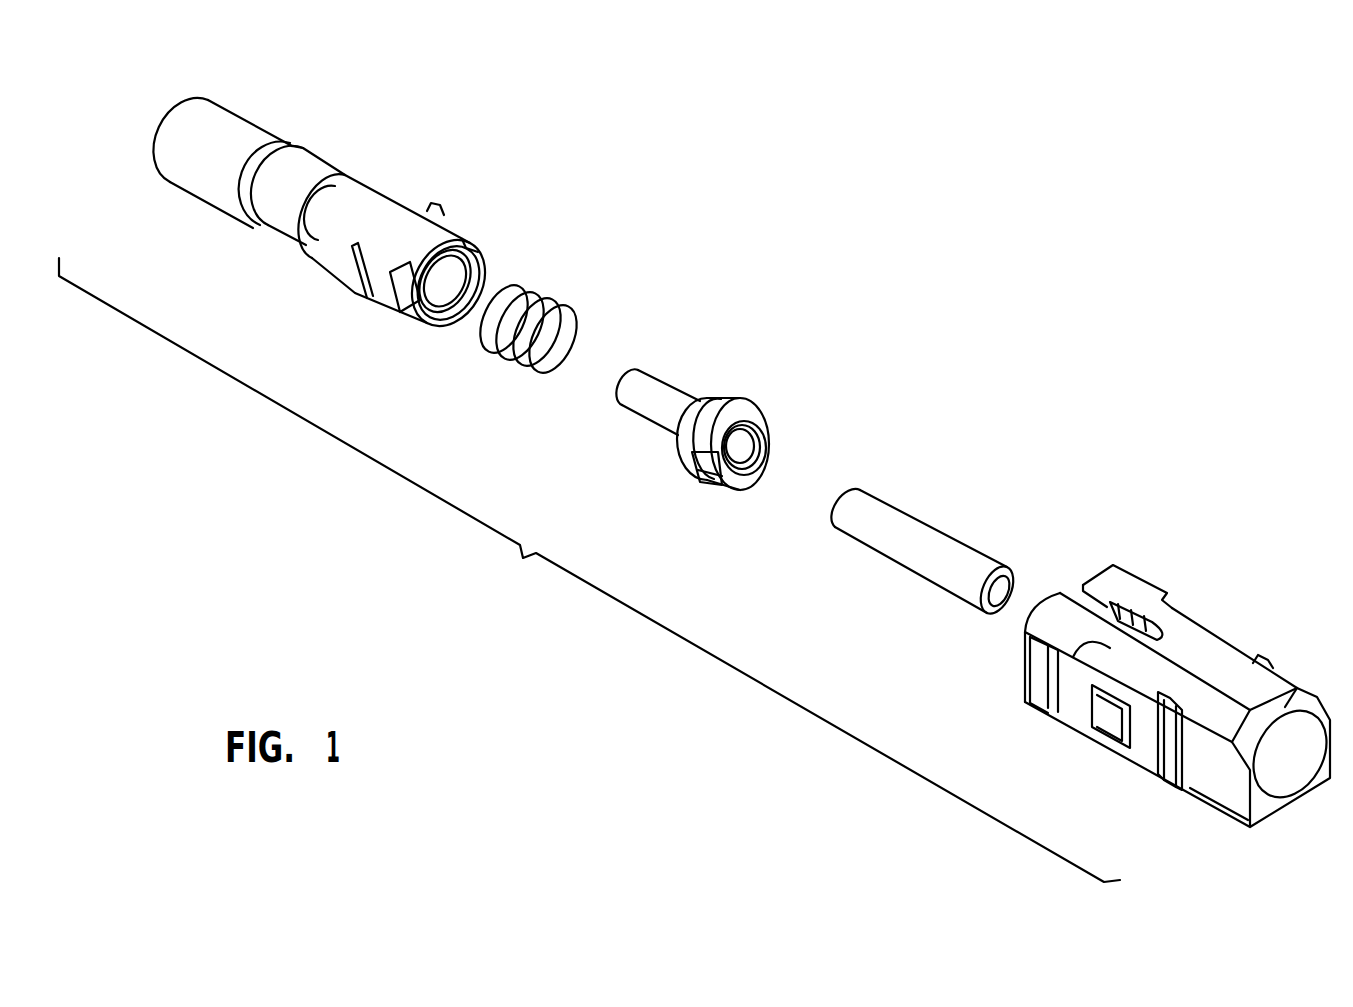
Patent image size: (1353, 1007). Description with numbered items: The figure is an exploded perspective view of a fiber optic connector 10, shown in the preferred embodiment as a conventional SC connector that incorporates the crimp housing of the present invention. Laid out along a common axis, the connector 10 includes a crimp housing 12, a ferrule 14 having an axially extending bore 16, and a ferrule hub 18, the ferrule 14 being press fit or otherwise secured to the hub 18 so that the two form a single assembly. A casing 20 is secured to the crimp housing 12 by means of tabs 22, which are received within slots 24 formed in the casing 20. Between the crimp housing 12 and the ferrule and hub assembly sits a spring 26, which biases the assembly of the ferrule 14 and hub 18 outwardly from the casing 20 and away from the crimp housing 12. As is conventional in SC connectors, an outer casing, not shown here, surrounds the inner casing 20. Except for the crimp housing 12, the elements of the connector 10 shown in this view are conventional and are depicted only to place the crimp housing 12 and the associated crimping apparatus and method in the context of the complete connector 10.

The fiber optic connector 10 is at (589, 570).
The crimp housing 12 is at (298, 88).
The ferrule 14 is at (951, 495).
The axially extending bore 16 is at (1000, 593).
The ferrule hub 18 is at (695, 354).
The casing 20 is at (1179, 670).
The tabs 22 is at (437, 203).
The slots 24 is at (1057, 715).
The spring 26 is at (545, 290).